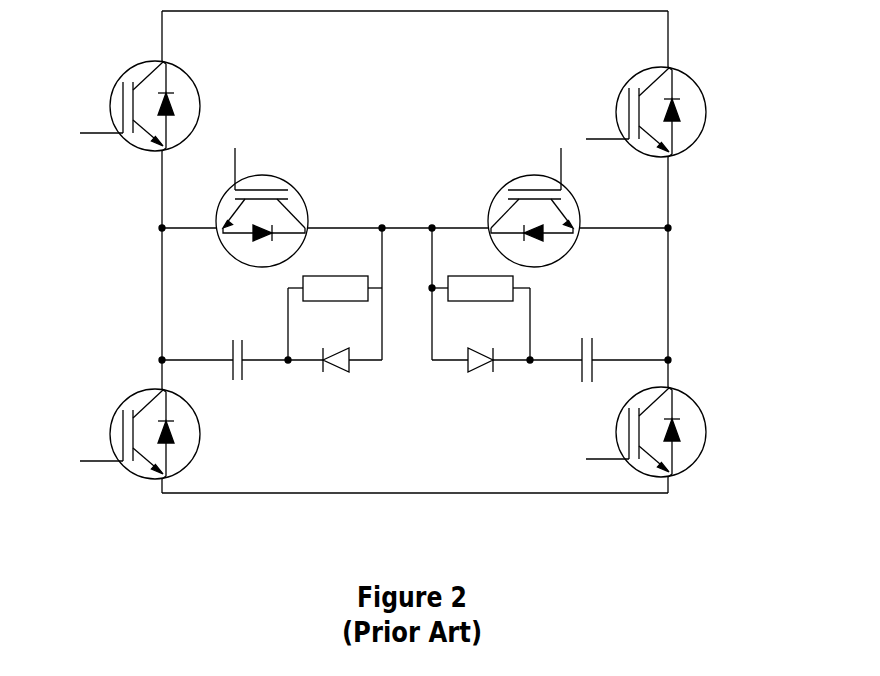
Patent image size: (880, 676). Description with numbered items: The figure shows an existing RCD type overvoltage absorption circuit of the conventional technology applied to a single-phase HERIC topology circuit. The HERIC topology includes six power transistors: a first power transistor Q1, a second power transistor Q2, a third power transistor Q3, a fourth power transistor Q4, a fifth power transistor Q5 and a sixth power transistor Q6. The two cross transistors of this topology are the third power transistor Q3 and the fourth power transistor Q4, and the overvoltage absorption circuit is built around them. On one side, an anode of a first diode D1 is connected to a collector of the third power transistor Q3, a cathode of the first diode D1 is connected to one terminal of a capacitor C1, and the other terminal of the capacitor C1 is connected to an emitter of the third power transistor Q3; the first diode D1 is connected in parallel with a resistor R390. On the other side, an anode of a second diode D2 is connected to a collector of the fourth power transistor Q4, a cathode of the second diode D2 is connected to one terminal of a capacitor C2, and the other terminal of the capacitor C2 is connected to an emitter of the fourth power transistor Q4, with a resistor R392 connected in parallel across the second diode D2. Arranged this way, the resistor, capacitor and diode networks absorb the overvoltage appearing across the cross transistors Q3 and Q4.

The first power transistor Q1 is at (123, 112).
The second power transistor Q2 is at (679, 113).
The third power transistor Q3 is at (280, 195).
The fourth power transistor Q4 is at (519, 195).
The fifth power transistor Q5 is at (123, 449).
The sixth power transistor Q6 is at (637, 450).
The resistor R390 is at (335, 318).
The resistor R392 is at (481, 318).
The first diode D1 is at (334, 382).
The second diode D2 is at (474, 382).
The capacitor C1 is at (240, 378).
The capacitor C2 is at (582, 376).